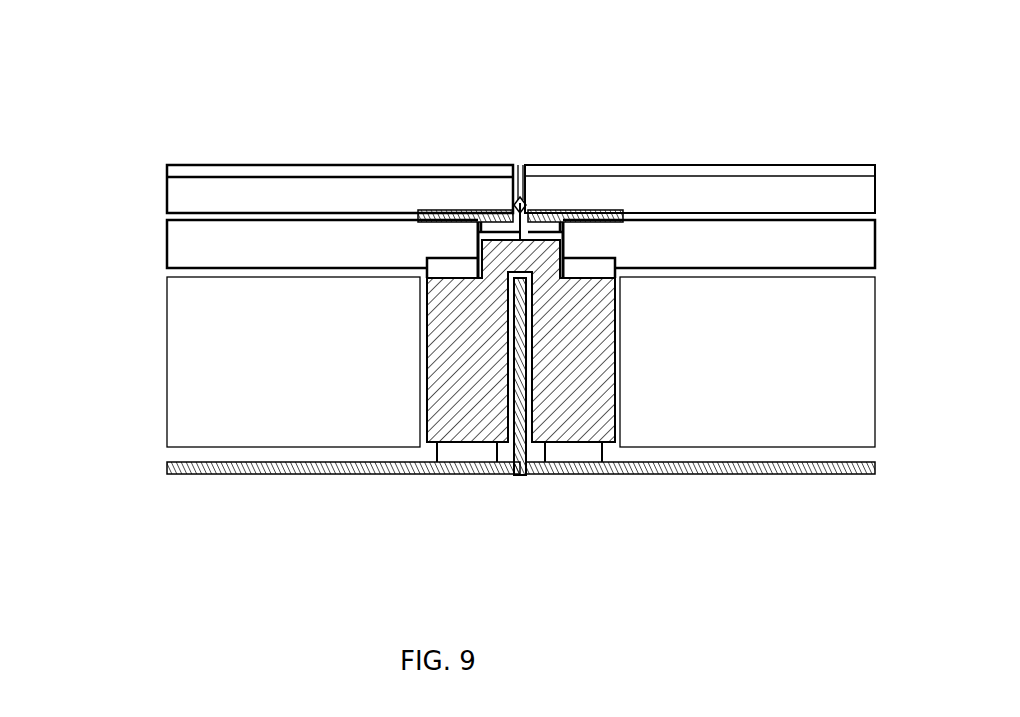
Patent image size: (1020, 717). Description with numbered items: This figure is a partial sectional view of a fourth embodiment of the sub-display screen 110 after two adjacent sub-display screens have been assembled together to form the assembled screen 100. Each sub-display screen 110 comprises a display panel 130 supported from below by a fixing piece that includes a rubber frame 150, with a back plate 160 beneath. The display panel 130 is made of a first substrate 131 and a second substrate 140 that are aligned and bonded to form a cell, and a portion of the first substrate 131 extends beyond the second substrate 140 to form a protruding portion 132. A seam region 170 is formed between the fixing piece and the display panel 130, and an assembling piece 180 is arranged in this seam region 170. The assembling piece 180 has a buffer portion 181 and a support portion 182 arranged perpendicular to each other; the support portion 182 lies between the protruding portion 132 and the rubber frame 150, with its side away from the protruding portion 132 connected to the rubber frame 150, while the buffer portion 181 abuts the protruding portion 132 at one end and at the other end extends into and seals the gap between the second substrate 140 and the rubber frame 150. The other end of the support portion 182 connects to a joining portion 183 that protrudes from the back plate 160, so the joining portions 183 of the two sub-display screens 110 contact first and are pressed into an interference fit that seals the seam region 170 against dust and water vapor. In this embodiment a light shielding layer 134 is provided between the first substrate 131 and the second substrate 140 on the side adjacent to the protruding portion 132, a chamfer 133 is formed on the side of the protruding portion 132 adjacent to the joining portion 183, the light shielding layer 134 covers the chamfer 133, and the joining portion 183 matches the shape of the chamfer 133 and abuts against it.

The assembled screen 100 is at (166, 68).
The sub-display screen 110 is at (157, 165).
The display panel 130 is at (235, 92).
The first substrate 131 is at (233, 193).
The protruding portion 132 is at (548, 192).
The chamfer 133 is at (520, 200).
The light shielding layer 134 is at (626, 210).
The second substrate 140 is at (306, 243).
The rubber frame 150 is at (445, 373).
The back plate 160 is at (400, 475).
The seam region 170 is at (586, 220).
The assembling piece 180 is at (400, 83).
The buffer portion 181 is at (476, 248).
The support portion 182 is at (498, 236).
The joining portion 183 is at (517, 198).